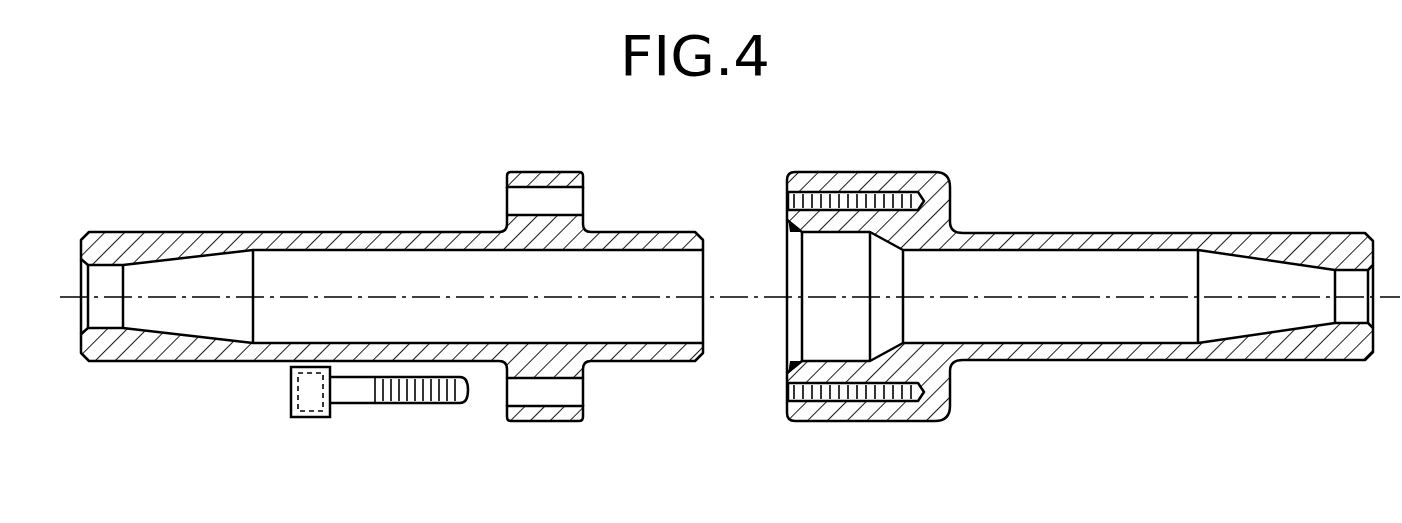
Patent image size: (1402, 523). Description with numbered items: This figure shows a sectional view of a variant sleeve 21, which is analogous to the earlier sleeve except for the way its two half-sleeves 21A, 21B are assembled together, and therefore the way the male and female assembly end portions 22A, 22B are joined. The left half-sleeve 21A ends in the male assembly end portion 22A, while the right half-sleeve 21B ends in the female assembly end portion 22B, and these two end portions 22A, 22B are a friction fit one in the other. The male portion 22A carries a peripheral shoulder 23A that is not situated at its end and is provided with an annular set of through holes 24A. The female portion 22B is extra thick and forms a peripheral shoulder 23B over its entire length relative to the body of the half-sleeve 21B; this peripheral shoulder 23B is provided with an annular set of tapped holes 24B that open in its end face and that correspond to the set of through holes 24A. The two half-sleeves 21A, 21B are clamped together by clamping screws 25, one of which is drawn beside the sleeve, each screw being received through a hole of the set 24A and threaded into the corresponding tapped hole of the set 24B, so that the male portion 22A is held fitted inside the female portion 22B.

The sleeve 21 is at (723, 184).
The half-sleeve 21A is at (337, 236).
The half-sleeve 21B is at (1127, 240).
The male assembly end portion 22A is at (656, 240).
The female assembly end portion 22B is at (788, 232).
The peripheral shoulder 23A is at (545, 181).
The peripheral shoulder 23B is at (880, 178).
The through holes 24A is at (576, 395).
The tapped holes 24B is at (845, 392).
The clamping screws 25 is at (353, 391).